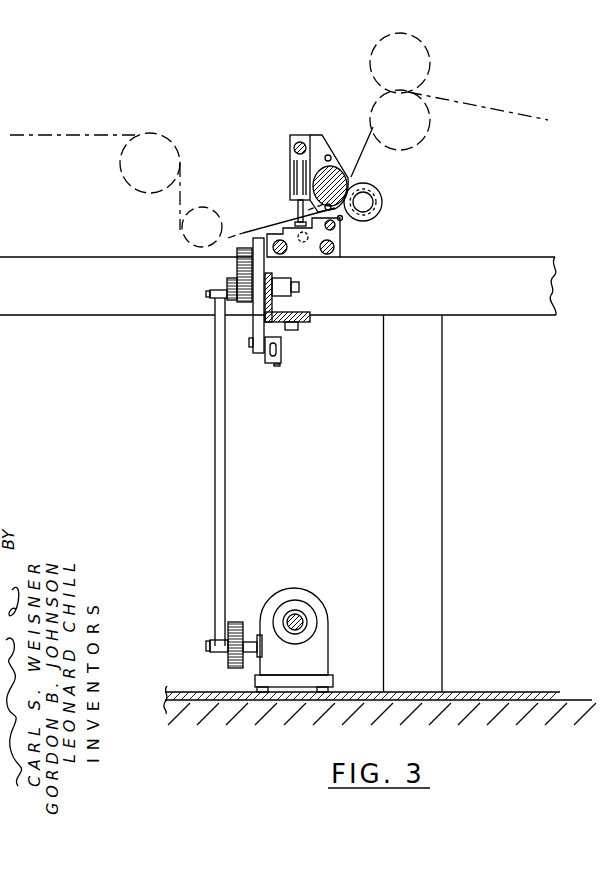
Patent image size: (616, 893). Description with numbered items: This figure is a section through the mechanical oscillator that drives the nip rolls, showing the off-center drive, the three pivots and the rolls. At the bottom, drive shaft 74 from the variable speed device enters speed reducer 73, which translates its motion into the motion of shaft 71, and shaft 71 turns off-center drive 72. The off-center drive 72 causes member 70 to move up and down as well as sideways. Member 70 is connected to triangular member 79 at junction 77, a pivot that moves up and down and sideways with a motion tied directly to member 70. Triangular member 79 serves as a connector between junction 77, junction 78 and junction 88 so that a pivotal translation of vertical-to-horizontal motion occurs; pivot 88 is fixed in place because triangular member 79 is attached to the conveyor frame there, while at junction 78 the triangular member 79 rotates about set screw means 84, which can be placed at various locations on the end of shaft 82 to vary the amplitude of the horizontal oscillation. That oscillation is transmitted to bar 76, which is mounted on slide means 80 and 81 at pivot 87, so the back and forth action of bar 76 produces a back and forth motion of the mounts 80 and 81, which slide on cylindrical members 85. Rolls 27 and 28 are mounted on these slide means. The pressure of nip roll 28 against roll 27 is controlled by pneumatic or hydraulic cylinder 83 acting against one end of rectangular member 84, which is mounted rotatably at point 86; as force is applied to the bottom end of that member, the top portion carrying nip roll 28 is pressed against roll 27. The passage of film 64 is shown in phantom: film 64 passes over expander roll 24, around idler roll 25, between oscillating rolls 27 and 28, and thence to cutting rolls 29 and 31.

The expander roll 24 is at (120, 180).
The idler roll 25 is at (205, 207).
The roll 27 is at (340, 177).
The nip roll 28 is at (382, 205).
The cutting roll 29 is at (428, 57).
The cutting roll 31 is at (430, 127).
The film 64 is at (36, 133).
The member 70 is at (213, 493).
The shaft 71 is at (250, 637).
The off-center drive 72 is at (228, 663).
The speed reducer 73 is at (325, 608).
The drive shaft 74 is at (297, 610).
The bar 76 is at (237, 265).
The junction 77 is at (213, 295).
The junction 78 is at (250, 343).
The triangular member 79 is at (253, 322).
The slide means 80 is at (293, 210).
The slide means 81 is at (322, 253).
The shaft 82 is at (282, 343).
The pneumatic or hydraulic cylinder 83 is at (292, 153).
The set screw means 84 is at (342, 219).
The cylindrical member 85 is at (340, 233).
The point 86 is at (336, 227).
The pivot 87 is at (233, 275).
The junction 88 is at (285, 295).